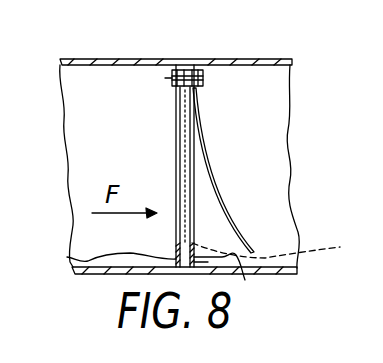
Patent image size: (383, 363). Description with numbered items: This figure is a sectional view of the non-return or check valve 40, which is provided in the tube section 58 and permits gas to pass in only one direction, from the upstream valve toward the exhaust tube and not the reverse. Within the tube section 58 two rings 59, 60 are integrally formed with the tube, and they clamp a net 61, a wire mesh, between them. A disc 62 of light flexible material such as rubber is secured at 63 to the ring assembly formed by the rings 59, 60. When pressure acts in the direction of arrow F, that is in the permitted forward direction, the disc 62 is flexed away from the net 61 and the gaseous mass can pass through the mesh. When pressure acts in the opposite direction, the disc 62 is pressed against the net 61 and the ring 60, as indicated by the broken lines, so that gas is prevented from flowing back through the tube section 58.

The non-return valve 40 is at (328, 127).
The tube section 58 is at (123, 273).
The ring 59 is at (67, 257).
The ring 60 is at (245, 280).
The net 61 is at (185, 135).
The disc 62 is at (216, 167).
The securing point 63 is at (210, 82).